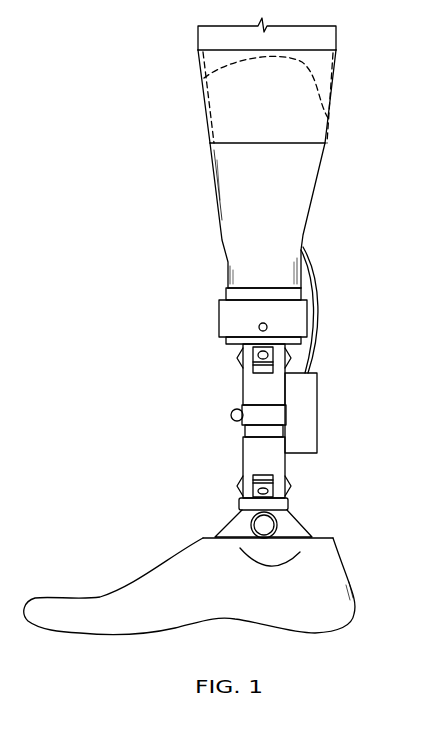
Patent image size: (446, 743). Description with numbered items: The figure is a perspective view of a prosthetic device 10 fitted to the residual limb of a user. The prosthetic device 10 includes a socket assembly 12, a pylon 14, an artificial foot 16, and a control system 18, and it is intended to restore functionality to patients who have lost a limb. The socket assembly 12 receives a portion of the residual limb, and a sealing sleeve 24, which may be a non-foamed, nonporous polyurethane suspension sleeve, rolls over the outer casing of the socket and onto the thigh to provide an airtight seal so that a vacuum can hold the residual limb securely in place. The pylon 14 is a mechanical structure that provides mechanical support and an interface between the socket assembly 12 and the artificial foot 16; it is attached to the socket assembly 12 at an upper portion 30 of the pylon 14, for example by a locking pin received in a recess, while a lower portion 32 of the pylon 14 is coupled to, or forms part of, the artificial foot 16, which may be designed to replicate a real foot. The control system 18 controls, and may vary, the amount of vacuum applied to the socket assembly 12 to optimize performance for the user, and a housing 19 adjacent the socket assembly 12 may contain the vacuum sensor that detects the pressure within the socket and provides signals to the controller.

The prosthetic device 10 is at (115, 170).
The socket assembly 12 is at (308, 202).
The pylon 14 is at (248, 457).
The artificial foot 16 is at (335, 566).
The control system 18 is at (333, 372).
The housing 19 is at (310, 412).
The sealing sleeve 24 is at (325, 62).
The upper portion 30 is at (198, 312).
The lower portion 32 is at (207, 508).